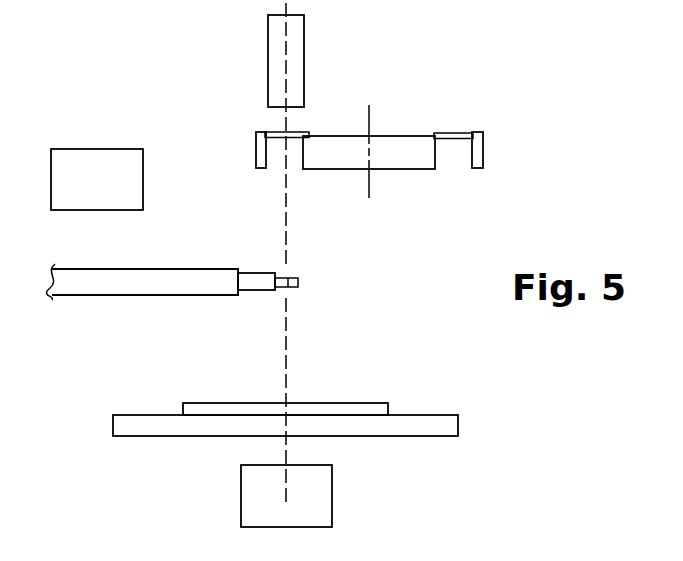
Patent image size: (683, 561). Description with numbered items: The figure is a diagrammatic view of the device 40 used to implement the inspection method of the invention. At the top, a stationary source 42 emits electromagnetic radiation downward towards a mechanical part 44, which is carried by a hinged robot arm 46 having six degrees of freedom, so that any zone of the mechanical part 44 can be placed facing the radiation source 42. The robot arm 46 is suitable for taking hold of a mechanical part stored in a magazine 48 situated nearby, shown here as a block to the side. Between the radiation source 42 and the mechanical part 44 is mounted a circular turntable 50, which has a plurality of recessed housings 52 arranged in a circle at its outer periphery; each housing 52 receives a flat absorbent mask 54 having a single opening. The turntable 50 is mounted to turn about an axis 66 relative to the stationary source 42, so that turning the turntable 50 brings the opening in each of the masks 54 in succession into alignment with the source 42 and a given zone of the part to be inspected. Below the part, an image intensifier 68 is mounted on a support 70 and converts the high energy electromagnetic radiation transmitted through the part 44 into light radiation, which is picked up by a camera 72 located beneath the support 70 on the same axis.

The device 40 is at (512, 101).
The stationary source 42 is at (298, 40).
The mechanical part 44 is at (298, 282).
The hinged robot arm 46 is at (212, 295).
The magazine 48 is at (115, 162).
The circular turntable 50 is at (405, 132).
The recessed housings 52 is at (279, 157).
The flat absorbent mask 54 is at (300, 130).
The axis 66 is at (370, 185).
The image intensifier 68 is at (377, 402).
The support 70 is at (460, 420).
The camera 72 is at (310, 495).